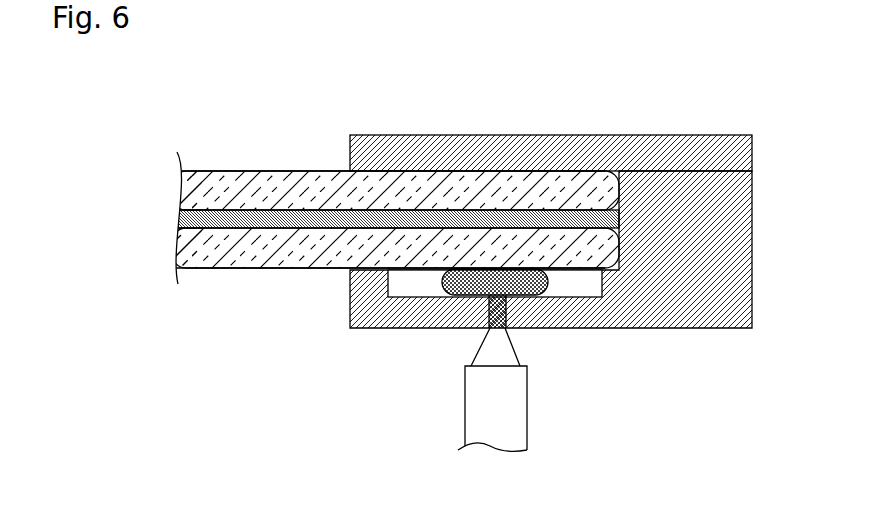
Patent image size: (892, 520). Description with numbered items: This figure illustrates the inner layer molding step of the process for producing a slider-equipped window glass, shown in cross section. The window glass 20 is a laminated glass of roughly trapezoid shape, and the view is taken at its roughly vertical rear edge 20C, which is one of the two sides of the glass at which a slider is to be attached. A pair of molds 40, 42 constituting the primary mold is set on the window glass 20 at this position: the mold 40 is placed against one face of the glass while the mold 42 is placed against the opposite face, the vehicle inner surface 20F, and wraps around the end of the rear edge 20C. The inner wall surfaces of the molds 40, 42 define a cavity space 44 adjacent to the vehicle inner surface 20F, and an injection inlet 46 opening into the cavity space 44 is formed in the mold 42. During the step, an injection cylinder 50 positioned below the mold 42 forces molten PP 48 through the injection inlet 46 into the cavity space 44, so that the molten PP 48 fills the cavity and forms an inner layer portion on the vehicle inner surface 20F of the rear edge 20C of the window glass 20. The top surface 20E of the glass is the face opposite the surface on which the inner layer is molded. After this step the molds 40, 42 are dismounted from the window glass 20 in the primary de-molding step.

The window glass 20 is at (490, 238).
The first surface of panel 20E is at (292, 170).
The vehicle inner surface 20F is at (572, 271).
The rear edge 20C is at (622, 219).
The mold 40 is at (494, 135).
The mold 42 is at (706, 328).
The cavity space 44 is at (410, 283).
The injection inlet 46 is at (500, 312).
The molten PP 48 is at (465, 297).
The injection cylinder 50 is at (470, 412).